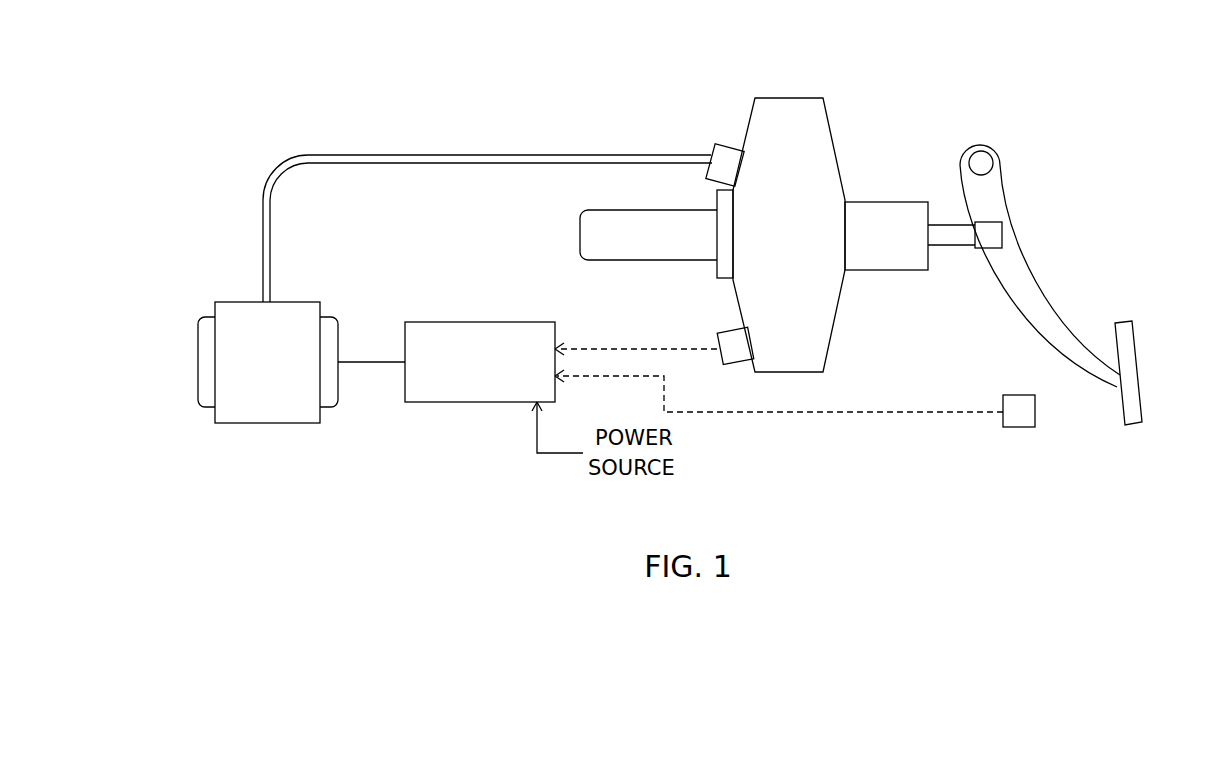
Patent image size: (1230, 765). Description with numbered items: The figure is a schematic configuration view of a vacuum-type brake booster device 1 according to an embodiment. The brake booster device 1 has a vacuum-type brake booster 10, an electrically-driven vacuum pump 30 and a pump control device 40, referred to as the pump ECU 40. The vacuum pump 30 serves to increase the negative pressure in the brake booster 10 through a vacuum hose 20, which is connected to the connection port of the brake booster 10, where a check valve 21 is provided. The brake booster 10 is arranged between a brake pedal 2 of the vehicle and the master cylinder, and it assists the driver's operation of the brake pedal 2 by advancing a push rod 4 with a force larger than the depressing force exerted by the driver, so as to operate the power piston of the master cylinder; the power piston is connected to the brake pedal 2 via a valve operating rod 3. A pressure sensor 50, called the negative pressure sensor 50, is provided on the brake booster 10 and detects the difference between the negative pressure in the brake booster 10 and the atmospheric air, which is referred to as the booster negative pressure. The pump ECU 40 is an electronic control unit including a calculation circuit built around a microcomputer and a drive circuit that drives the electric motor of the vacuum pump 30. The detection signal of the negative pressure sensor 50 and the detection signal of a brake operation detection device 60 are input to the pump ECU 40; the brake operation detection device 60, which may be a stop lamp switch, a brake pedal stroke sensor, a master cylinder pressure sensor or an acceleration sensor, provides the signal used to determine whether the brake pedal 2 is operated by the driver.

The brake booster device 1 is at (324, 112).
The brake pedal 2 is at (1140, 353).
The valve operating rod 3 is at (895, 202).
The push rod 4 is at (631, 260).
The brake booster 10 is at (828, 118).
The vacuum hose 20 is at (498, 155).
The check valve 21 is at (728, 143).
The vacuum pump 30 is at (243, 302).
The pump control device 40 is at (478, 322).
The pressure sensor 50 is at (724, 330).
The brake operation detection device 60 is at (1015, 427).